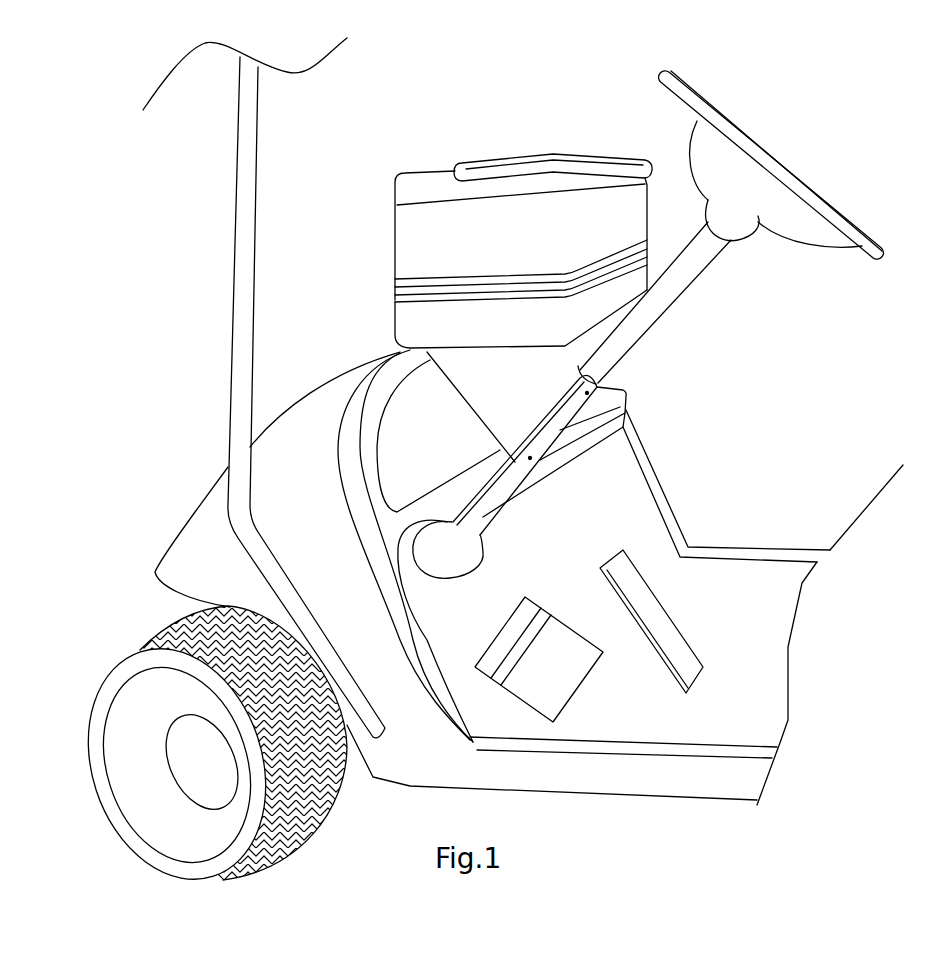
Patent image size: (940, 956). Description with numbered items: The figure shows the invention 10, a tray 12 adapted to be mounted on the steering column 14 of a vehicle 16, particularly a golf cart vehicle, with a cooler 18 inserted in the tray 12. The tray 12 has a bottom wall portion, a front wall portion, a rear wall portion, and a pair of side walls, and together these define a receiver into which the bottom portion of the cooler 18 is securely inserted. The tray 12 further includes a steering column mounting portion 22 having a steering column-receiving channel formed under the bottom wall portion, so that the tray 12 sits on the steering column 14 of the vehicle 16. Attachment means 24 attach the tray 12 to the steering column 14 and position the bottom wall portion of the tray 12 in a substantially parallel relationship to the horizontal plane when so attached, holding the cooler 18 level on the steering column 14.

The invention 10 is at (378, 318).
The tray 12 is at (420, 335).
The steering column 14 is at (673, 287).
The vehicle 16 is at (318, 495).
The cooler 18 is at (541, 249).
The steering column mounting portion 22 is at (517, 423).
The attachment means 24 is at (624, 430).